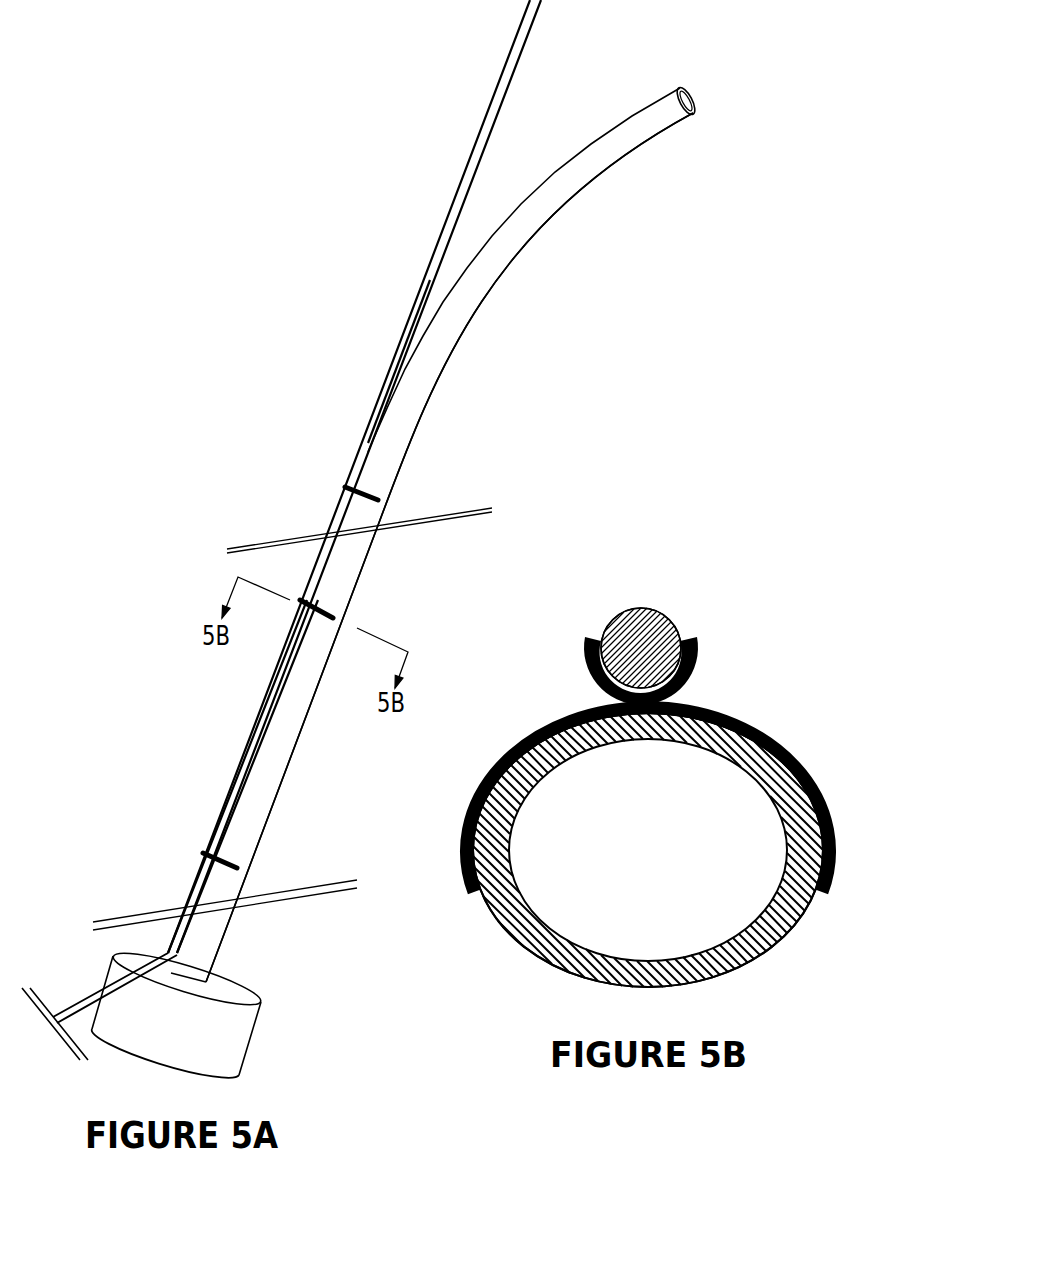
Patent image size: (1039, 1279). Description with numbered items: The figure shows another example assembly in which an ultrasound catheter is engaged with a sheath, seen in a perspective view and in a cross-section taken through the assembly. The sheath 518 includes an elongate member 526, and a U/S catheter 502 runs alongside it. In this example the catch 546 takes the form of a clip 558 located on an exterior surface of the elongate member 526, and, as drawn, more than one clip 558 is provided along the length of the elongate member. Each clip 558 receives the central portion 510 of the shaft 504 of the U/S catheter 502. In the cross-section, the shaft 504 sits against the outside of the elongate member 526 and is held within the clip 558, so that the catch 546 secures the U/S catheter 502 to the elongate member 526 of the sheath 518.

In FIG. 5A, the U/S catheter 502 is at (395, 350).
In FIG. 5A, the shaft 504 is at (452, 202).
In FIG. 5B, the shaft 504 is at (668, 620).
In FIG. 5A, the central portion 510 is at (243, 745).
In FIG. 5B, the central portion 510 is at (632, 628).
In FIG. 5A, the sheath 518 is at (443, 380).
In FIG. 5B, the sheath 518 is at (520, 950).
In FIG. 5A, the elongate member 526 is at (473, 307).
In FIG. 5B, the elongate member 526 is at (768, 953).
In FIG. 5A, the catch 546 is at (370, 665).
In FIG. 5B, the catch 546 is at (677, 764).
In FIG. 5A, the clip 558 is at (372, 490).
In FIG. 5B, the clip 558 is at (717, 712).